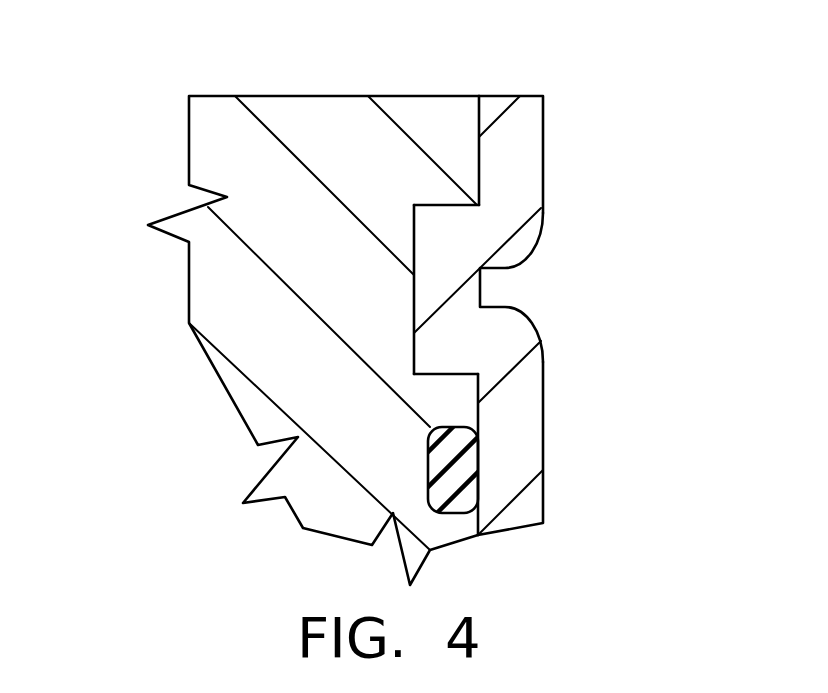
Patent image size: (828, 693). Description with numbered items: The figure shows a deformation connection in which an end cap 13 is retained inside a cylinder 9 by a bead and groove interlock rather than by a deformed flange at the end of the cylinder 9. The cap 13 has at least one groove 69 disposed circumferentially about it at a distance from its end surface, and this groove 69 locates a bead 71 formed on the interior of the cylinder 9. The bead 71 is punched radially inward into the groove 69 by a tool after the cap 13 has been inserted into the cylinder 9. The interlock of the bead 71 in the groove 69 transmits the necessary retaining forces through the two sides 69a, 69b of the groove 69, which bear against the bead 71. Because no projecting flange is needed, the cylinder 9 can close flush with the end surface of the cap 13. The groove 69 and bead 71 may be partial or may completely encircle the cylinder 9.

The cylinder 9 is at (508, 470).
The cap 13 is at (237, 125).
The groove 69 is at (390, 283).
The side of the groove 69a is at (434, 180).
The side of the groove 69b is at (424, 395).
The bead 71 is at (518, 296).